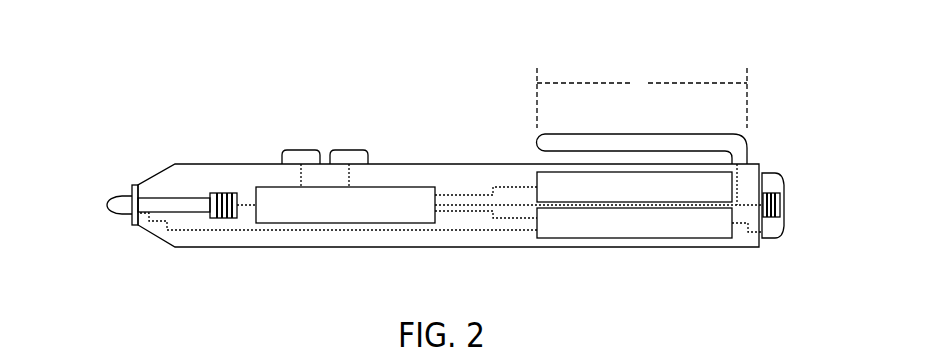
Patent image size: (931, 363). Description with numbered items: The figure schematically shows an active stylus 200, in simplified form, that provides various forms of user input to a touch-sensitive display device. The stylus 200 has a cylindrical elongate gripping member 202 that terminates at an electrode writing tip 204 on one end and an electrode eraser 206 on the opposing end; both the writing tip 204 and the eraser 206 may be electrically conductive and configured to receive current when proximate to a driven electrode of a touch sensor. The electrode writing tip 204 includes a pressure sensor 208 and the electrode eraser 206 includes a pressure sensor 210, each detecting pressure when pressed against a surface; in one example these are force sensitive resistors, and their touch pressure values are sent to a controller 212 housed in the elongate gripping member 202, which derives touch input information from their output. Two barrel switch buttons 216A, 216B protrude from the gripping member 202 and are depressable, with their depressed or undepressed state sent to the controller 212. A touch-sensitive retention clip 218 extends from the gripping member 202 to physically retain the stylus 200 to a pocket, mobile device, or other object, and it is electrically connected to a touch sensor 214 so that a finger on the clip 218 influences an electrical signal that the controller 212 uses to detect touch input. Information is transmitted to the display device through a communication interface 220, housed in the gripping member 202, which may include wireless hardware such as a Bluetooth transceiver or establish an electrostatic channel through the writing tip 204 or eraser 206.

The stylus 200 is at (158, 77).
The elongate gripping member 202 is at (435, 248).
The electrode writing tip 204 is at (120, 196).
The electrode eraser 206 is at (783, 222).
The pressure sensor 208 is at (224, 192).
The pressure sensor 210 is at (771, 193).
The controller 212 is at (417, 214).
The touch sensor 214 is at (715, 232).
The barrel switch button 216A is at (301, 150).
The barrel switch button 216B is at (349, 150).
The touch-sensitive retention clip 218 is at (587, 134).
The communication interface 220 is at (720, 196).